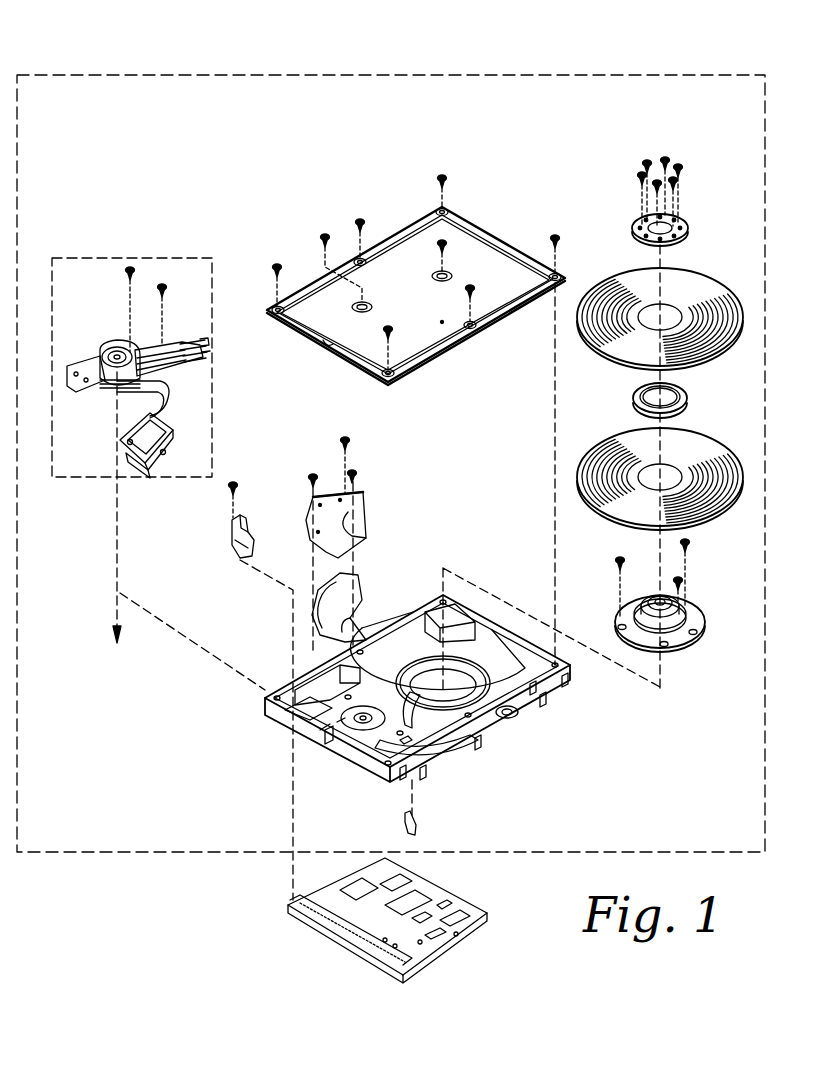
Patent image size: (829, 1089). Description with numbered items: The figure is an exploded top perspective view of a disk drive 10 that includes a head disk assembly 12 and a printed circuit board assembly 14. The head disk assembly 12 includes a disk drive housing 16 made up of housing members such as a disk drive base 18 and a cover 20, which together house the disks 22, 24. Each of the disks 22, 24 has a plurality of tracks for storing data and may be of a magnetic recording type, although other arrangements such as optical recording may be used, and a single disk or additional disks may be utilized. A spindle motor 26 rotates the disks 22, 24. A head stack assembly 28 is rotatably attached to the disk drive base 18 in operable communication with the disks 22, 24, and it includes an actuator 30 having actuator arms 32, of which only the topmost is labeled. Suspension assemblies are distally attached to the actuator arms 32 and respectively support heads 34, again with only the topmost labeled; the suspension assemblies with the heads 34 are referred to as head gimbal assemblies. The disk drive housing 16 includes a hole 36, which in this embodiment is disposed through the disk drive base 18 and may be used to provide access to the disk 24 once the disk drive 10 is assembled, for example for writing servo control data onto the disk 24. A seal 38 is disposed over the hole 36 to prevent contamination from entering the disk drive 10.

The disk drive 10 is at (200, 53).
The head disk assembly 12 is at (152, 852).
The printed circuit board assembly 14 is at (472, 927).
The disk drive housing 16 is at (527, 712).
The disk drive base 18 is at (487, 737).
The cover 20 is at (503, 293).
The disk 22 is at (603, 283).
The disk 24 is at (610, 442).
The spindle motor 26 is at (698, 613).
The head stack assembly 28 is at (157, 258).
The actuator 30 is at (103, 353).
The actuator arm 32 is at (143, 350).
The head 34 is at (197, 350).
The hole 36 is at (423, 728).
The seal 38 is at (422, 827).